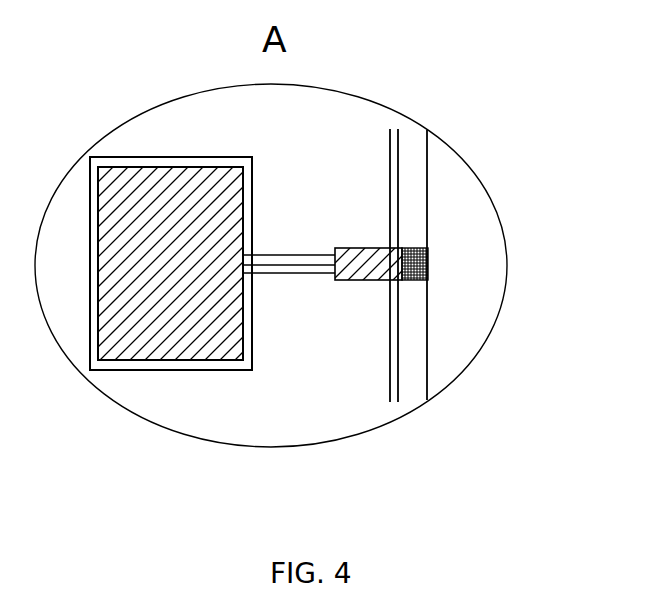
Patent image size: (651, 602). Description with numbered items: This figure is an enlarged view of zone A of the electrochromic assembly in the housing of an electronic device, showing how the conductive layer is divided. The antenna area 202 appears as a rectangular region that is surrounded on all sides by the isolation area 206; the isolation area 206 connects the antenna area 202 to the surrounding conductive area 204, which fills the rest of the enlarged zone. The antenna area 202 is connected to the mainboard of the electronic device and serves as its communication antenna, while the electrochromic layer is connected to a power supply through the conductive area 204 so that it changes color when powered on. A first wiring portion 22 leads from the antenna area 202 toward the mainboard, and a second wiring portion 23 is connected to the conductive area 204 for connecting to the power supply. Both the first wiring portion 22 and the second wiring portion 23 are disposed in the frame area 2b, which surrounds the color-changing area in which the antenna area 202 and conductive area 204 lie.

The conductive area 204 is at (308, 427).
The isolation area 206 is at (98, 367).
The antenna area 202 is at (183, 353).
The second wiring portion 23 is at (398, 178).
The frame area 2b is at (408, 193).
The first wiring portion 22 is at (428, 268).